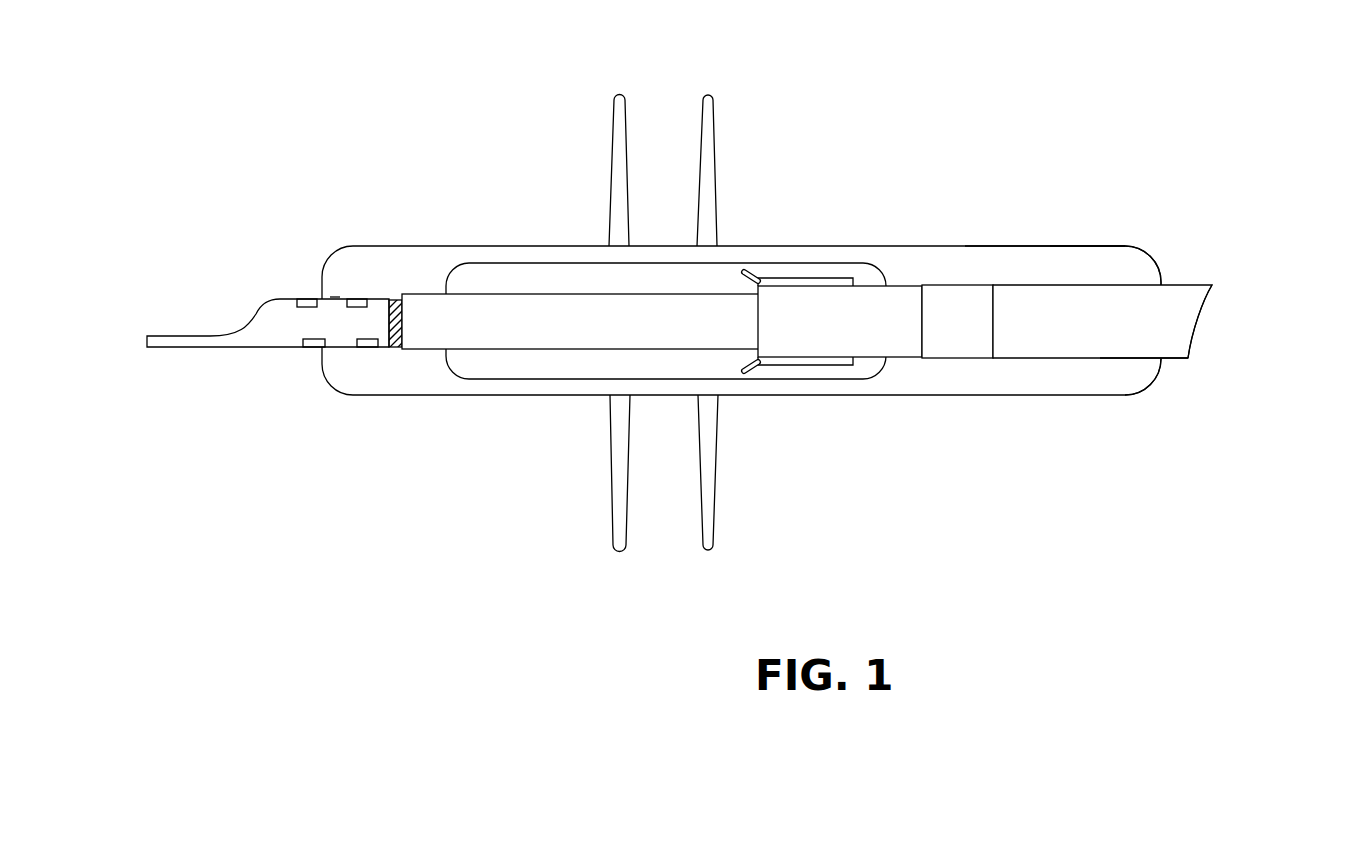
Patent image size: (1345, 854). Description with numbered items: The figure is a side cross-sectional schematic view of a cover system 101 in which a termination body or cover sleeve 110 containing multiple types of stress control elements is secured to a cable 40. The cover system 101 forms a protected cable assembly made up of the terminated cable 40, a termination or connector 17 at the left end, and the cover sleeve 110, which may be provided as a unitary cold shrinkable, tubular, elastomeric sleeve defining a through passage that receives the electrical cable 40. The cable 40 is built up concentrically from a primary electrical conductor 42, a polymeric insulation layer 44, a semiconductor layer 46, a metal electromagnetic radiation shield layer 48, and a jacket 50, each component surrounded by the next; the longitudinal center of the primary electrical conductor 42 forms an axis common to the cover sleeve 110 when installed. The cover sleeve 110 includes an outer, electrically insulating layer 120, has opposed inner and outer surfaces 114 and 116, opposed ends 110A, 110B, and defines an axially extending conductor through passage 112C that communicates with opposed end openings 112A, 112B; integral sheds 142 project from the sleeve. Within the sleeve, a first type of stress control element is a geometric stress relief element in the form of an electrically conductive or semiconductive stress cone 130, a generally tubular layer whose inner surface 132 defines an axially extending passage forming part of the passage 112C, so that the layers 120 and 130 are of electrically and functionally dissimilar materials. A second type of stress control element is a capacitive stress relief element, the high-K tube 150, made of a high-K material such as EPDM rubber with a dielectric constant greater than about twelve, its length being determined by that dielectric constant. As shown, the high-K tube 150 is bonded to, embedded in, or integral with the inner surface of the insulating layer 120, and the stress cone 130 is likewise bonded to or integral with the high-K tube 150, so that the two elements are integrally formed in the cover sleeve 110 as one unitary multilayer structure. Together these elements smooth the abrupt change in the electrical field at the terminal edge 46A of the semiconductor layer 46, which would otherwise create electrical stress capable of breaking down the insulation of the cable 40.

The cover system 101 is at (372, 112).
The electrically insulating layer 120 is at (423, 263).
The outer surface 116 is at (965, 244).
The inner surface 114 is at (1053, 283).
The cover sleeve 110 is at (1098, 243).
The end opening 112A is at (332, 297).
The end opening 112B is at (1175, 267).
The conductor through passage 112C is at (1118, 360).
The end 110A is at (323, 344).
The end 110B is at (1163, 362).
The integral sheds 142 is at (707, 187).
The high-K tube 150 is at (722, 372).
The connector 17 is at (288, 337).
The primary electrical conductor 42 is at (393, 348).
The polymeric insulation layer 44 is at (512, 335).
The semiconductor layer 46 is at (880, 340).
The metal electromagnetic radiation shield layer 48 is at (950, 340).
The cable 40 is at (1193, 283).
The jacket 50 is at (1182, 333).
The stress cone 130 is at (840, 278).
The inner surface 132 is at (833, 358).
The terminal edge 46A is at (762, 308).